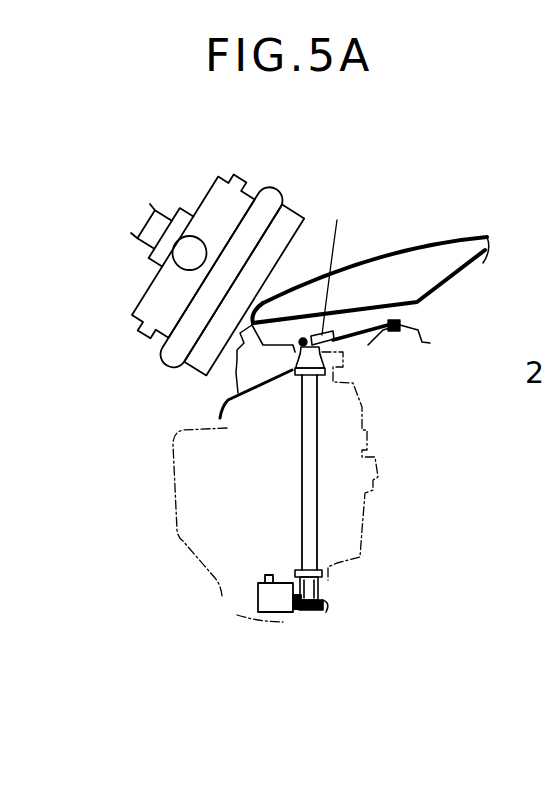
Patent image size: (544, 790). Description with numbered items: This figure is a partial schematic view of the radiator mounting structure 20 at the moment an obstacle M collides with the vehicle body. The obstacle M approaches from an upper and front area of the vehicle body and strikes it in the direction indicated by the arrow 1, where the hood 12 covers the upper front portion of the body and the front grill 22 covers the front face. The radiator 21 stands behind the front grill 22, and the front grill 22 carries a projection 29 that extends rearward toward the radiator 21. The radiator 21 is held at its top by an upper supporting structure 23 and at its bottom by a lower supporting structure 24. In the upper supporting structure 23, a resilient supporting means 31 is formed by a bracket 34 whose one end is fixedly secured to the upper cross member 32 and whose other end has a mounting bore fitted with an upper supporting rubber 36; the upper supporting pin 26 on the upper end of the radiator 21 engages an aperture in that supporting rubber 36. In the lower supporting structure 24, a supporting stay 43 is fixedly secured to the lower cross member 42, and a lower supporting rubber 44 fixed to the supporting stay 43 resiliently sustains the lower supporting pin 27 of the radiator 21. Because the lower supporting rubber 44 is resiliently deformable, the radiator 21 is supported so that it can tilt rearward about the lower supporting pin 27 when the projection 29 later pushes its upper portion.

The obstacle M is at (299, 196).
The arrow 1 is at (263, 303).
The hood 12 is at (435, 239).
The radiator mounting structure 20 is at (181, 403).
The radiator 21 is at (296, 522).
The front grill 22 is at (222, 375).
The upper supporting structure 23 is at (369, 318).
The lower supporting structure 24 is at (318, 641).
The upper supporting pin 26 is at (304, 337).
The lower supporting pin 27 is at (310, 617).
The projection 29 is at (265, 380).
The resilient supporting means 31 is at (372, 363).
The upper cross member 32 is at (428, 342).
The bracket 34 is at (368, 322).
The upper supporting rubber 36 is at (347, 318).
The lower cross member 42 is at (258, 598).
The supporting stay 43 is at (322, 607).
The lower supporting rubber 44 is at (323, 595).